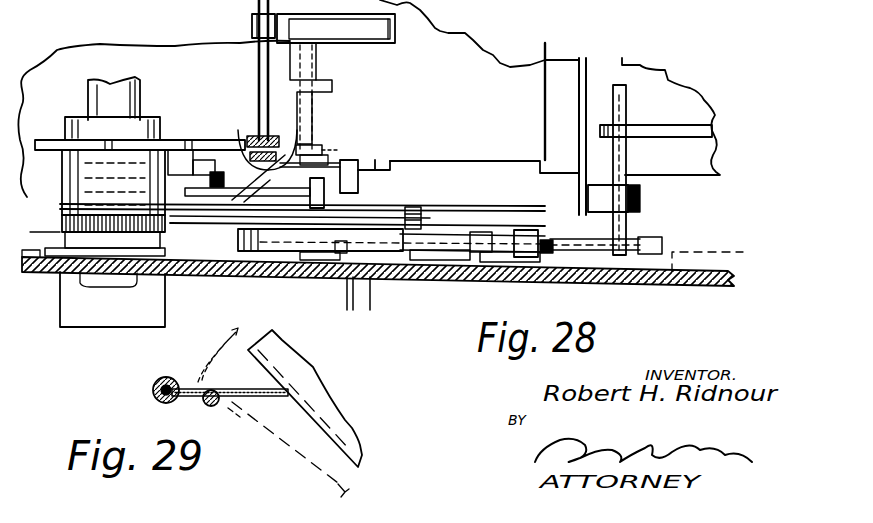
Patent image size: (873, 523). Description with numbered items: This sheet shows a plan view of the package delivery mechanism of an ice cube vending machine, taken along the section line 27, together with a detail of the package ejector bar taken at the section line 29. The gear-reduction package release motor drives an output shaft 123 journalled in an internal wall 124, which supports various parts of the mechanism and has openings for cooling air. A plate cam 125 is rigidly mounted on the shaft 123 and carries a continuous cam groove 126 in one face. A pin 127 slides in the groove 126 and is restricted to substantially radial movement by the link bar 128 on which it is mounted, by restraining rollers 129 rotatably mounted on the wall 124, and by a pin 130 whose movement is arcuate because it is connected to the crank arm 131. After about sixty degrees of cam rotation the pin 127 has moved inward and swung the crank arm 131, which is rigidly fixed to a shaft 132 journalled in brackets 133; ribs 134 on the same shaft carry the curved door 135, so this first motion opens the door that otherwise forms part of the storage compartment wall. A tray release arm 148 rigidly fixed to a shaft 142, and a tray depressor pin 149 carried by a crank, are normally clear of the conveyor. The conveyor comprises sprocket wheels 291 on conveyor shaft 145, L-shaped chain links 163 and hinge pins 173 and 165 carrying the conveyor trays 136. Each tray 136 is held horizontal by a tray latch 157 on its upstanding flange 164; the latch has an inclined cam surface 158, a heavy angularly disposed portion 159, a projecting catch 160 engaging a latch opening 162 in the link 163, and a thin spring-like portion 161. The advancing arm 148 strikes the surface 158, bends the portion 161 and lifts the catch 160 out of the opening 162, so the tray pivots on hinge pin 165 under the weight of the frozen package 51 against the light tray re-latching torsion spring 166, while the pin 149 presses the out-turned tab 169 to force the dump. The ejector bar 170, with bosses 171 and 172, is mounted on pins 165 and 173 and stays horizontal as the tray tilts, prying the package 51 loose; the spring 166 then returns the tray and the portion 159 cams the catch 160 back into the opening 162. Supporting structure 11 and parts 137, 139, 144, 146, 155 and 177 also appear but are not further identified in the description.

In FIG. 28, the frame support 11 is at (58, 298).
In FIG. 28, the section line 27 is at (29, 228).
In FIG. 28, the section line 29— 29 is at (238, 17).
In FIG. 29, the frozen package 51 is at (353, 428).
In FIG. 28, the output shaft 123 is at (375, 298).
In FIG. 28, the internal wall 124 is at (587, 284).
In FIG. 28, the plate cam 125 is at (320, 245).
In FIG. 28, the cam groove 126 is at (418, 228).
In FIG. 28, the pin 127 is at (353, 243).
In FIG. 28, the link bar 128 is at (493, 262).
In FIG. 28, the restraining rollers 129 is at (425, 265).
In FIG. 28, the pin 130 is at (548, 241).
In FIG. 28, the crank arm 131 is at (608, 254).
In FIG. 28, the shaft 132 is at (628, 226).
In FIG. 28, the brackets 133 is at (642, 200).
In FIG. 28, the ribs 134 is at (668, 128).
In FIG. 28, the curved door 135 is at (692, 92).
In FIG. 28, the conveyor tray 136 is at (500, 158).
In FIG. 29, the conveyor tray 136 is at (281, 446).
In FIG. 28, the bar 137 is at (420, 206).
In FIG. 28, the bar 139 is at (363, 218).
In FIG. 28, the shaft 142 is at (178, 172).
In FIG. 28, the gear housing 144 is at (63, 186).
In FIG. 28, the conveyor shaft 145 is at (146, 95).
In FIG. 28, the plate 146 is at (65, 162).
In FIG. 28, the tray release arm 148 is at (200, 166).
In FIG. 28, the tray depressor pin 149 is at (304, 193).
In FIG. 28, the gear 155 is at (105, 215).
In FIG. 28, the tray latch 157 is at (257, 178).
In FIG. 28, the inclined cam surface 158 is at (220, 172).
In FIG. 28, the angularly disposed portion 159 is at (247, 187).
In FIG. 28, the projecting catch 160 is at (298, 141).
In FIG. 28, the spring-like portion 161 is at (330, 165).
In FIG. 28, the latch opening 162 is at (255, 137).
In FIG. 28, the conveyor chain link 163 is at (215, 147).
In FIG. 28, the upstanding flange 164 is at (382, 164).
In FIG. 28, the hinge pin 165 is at (322, 86).
In FIG. 29, the hinge pin 165 is at (203, 405).
In FIG. 28, the tray re-latching torsion spring 166 is at (341, 150).
In FIG. 28, the out-turned tab 169 is at (360, 185).
In FIG. 28, the ejector bar 170 is at (373, 32).
In FIG. 29, the ejector bar 170 is at (242, 390).
In FIG. 29, the boss 171 is at (152, 397).
In FIG. 29, the boss 172 is at (216, 408).
In FIG. 28, the hinge pin 173 is at (258, 72).
In FIG. 29, the hinge pin 173 is at (160, 386).
In FIG. 28, the section line 177 is at (664, 245).
In FIG. 28, the sprocket wheels 291 is at (172, 135).